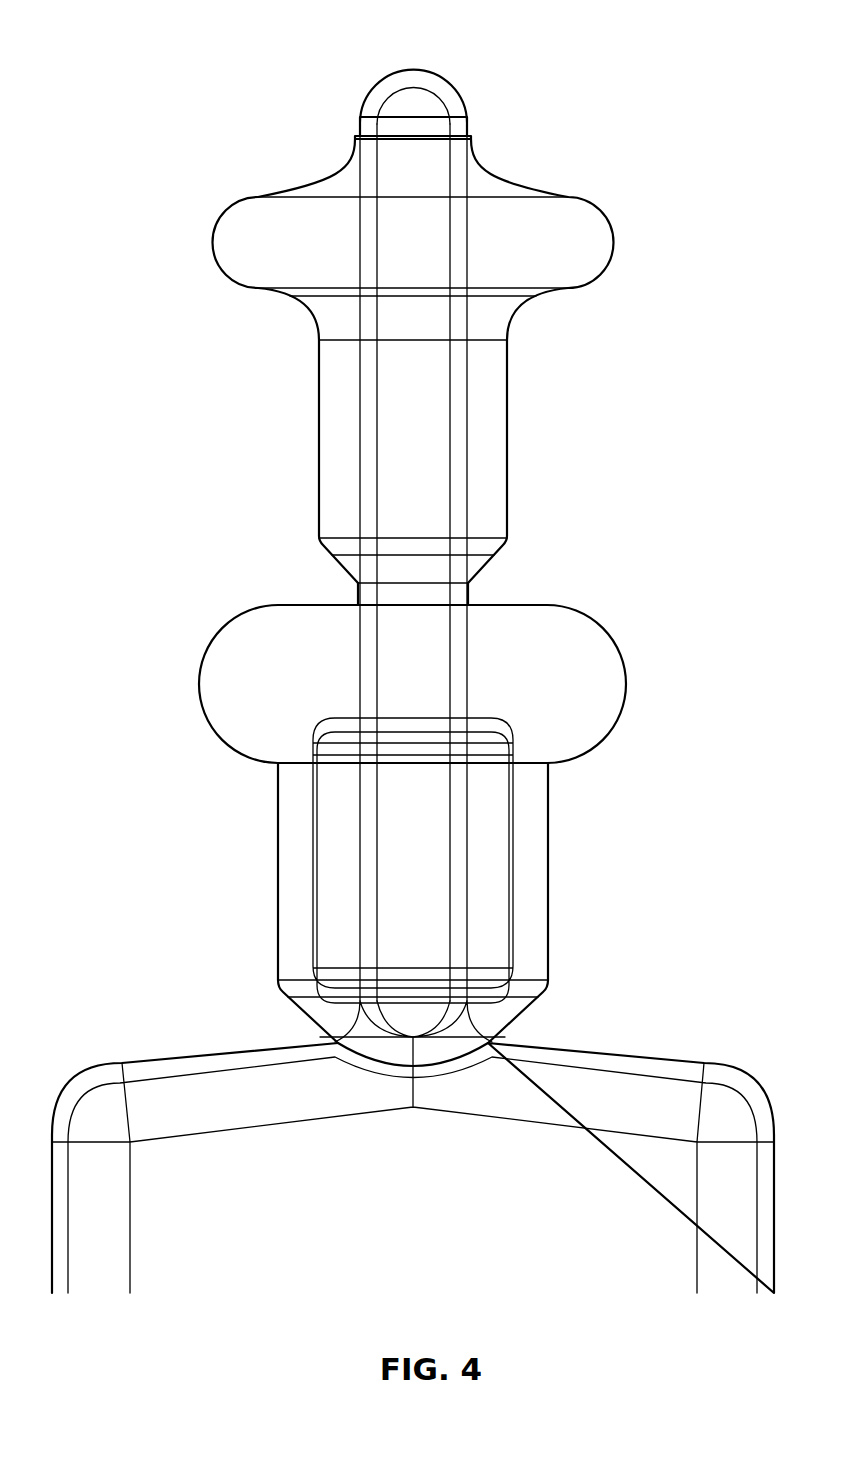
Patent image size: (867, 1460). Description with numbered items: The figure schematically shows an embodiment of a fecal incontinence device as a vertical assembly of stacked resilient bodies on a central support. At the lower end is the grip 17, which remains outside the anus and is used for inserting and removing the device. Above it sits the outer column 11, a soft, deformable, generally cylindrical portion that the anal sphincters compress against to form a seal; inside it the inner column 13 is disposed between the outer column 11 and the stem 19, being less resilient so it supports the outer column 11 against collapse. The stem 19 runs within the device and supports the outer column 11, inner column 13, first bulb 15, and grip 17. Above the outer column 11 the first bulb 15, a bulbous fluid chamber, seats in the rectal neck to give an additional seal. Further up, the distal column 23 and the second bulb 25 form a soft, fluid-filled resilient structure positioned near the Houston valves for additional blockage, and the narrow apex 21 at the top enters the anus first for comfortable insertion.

The outer column 11 is at (549, 832).
The inner column 13 is at (498, 867).
The first bulb 15 is at (628, 686).
The grip 17 is at (510, 1273).
The stem 19 is at (425, 595).
The apex 21 is at (412, 70).
The distal column 23 is at (507, 430).
The second bulb 25 is at (617, 250).